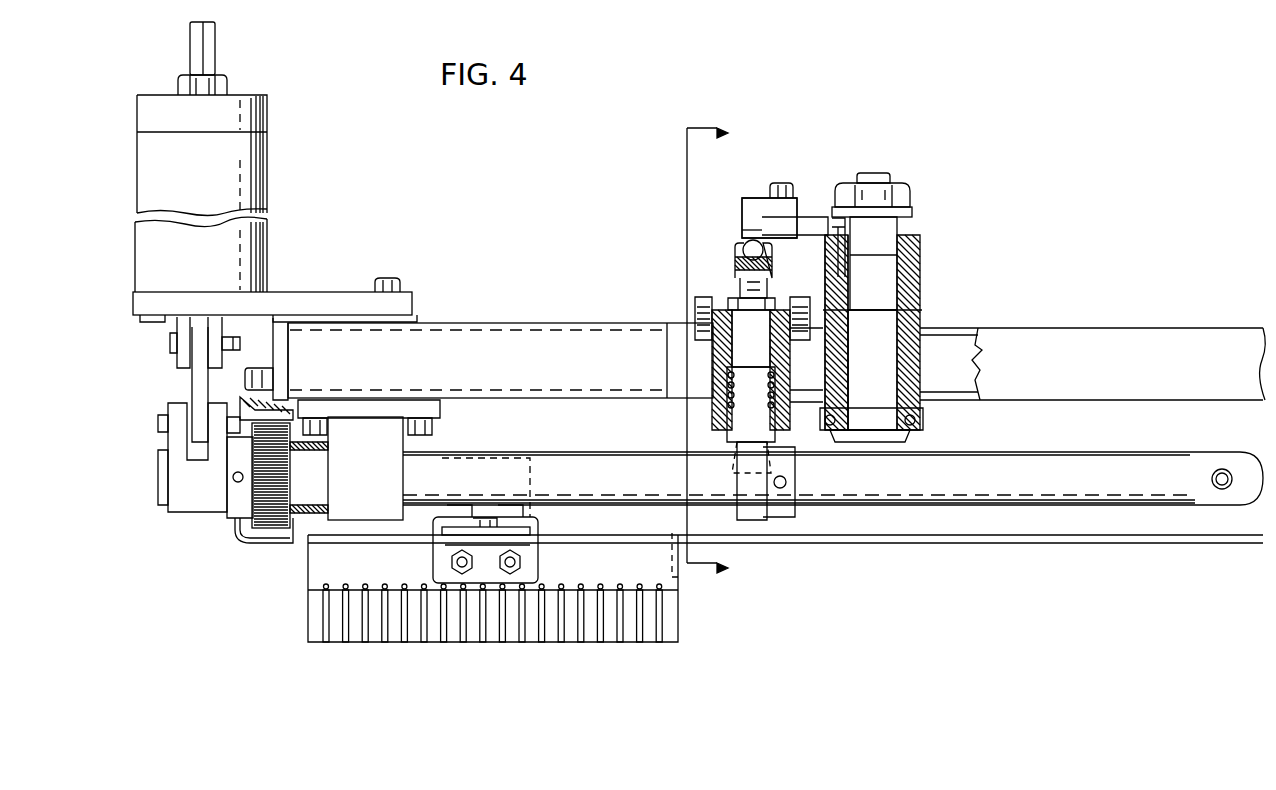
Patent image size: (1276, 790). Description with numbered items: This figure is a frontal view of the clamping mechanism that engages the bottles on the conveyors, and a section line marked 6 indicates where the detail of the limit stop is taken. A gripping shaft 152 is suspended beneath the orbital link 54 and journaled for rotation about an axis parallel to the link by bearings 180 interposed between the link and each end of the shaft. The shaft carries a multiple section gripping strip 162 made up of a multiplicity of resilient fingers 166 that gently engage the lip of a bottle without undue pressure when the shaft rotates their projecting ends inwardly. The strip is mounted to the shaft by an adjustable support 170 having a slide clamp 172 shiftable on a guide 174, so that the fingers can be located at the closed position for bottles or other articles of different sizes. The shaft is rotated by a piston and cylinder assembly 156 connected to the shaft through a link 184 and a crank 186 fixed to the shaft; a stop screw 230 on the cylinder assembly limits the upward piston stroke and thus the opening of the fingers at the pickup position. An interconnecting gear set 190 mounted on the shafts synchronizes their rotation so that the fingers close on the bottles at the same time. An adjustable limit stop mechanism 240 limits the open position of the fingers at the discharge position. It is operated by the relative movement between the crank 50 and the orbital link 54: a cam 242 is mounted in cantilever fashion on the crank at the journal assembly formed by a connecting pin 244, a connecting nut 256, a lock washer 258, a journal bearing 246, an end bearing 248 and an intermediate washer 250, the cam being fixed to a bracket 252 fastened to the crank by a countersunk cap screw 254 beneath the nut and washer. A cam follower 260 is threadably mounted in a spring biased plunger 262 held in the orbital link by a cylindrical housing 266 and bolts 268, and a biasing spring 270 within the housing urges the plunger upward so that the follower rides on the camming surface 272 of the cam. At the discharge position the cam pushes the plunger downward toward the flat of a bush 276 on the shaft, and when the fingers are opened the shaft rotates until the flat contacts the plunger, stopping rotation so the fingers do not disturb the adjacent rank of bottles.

The stop screw 230 is at (205, 43).
The piston and cylinder assembly 156 is at (250, 118).
The adjustable limit stop mechanism 240 is at (671, 155).
The cam 242 is at (750, 203).
The bracket 252 is at (812, 223).
The connecting nut 256 is at (893, 186).
The lock washer 258 is at (913, 208).
The connecting pin 244 is at (882, 235).
The countersunk cap screw 254 is at (900, 256).
The crank 50 is at (913, 273).
The camming surface 272 is at (750, 232).
The cam follower 260 is at (732, 267).
The bolts 268 is at (703, 302).
The intermediate washer 250 is at (913, 310).
The orbital link 54 is at (1068, 332).
The cylindrical housing 266 is at (717, 350).
The journal bearing 246 is at (918, 360).
The biasing spring 270 is at (717, 380).
The end bearing 248 is at (920, 416).
The link 184 is at (198, 385).
The crank 186 is at (180, 440).
The gripping shaft 152 is at (163, 493).
The bearings 180 is at (400, 447).
The plunger 262 is at (742, 435).
The interconnecting gear set 190 is at (268, 527).
The adjustable support 170 is at (495, 520).
The slide clamp 172 is at (442, 547).
The guide 174 is at (510, 532).
The bush 276 is at (757, 508).
The resilient fingers 166 is at (340, 642).
The gripping strip 162 is at (491, 614).
The section line 6- 6 is at (718, 347).